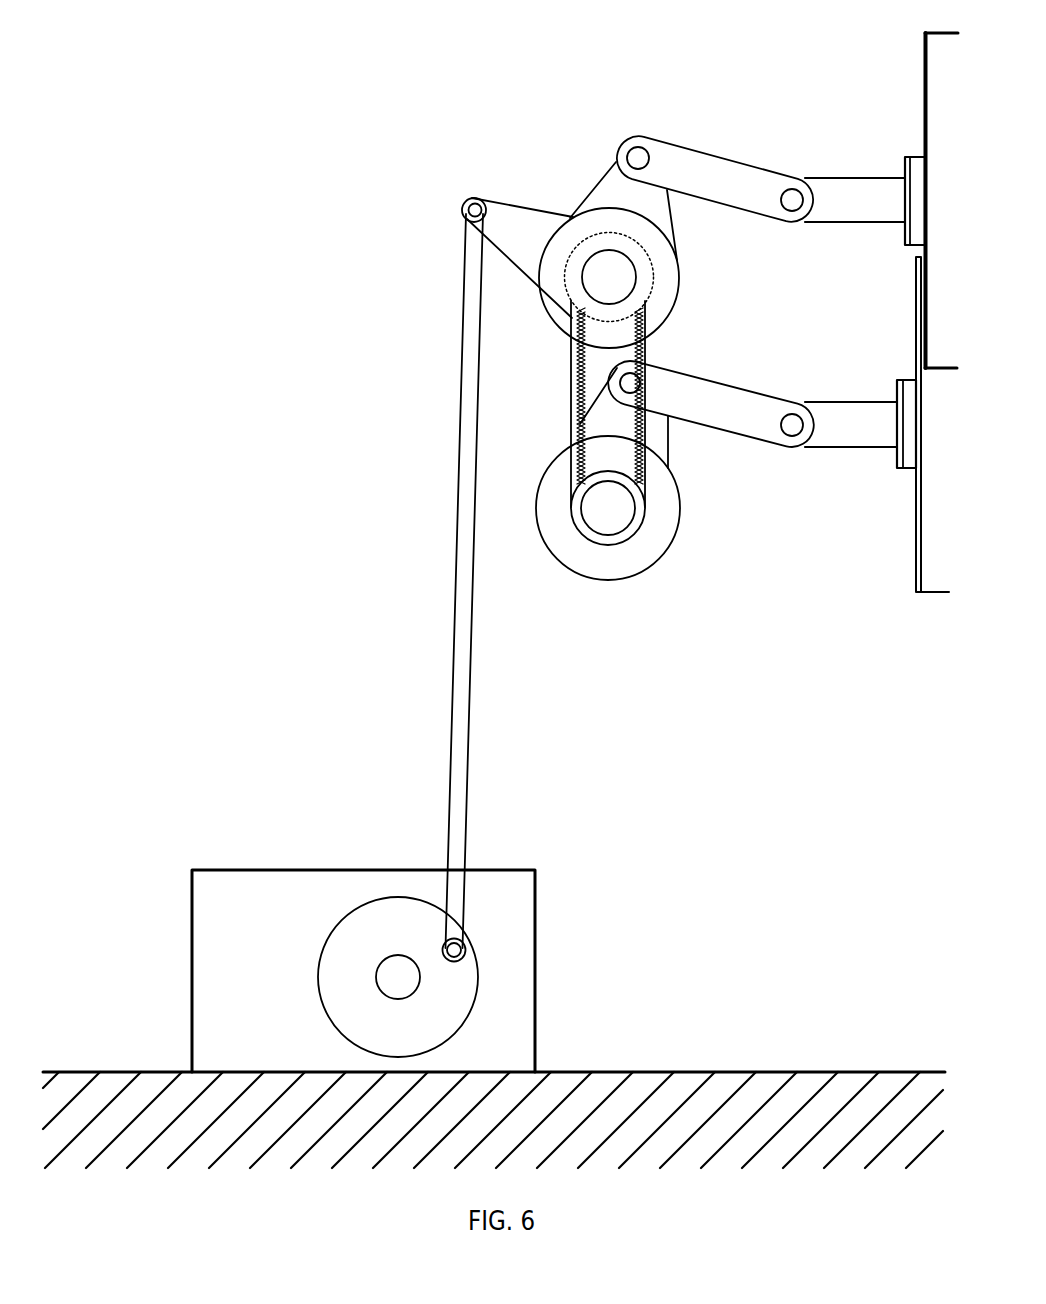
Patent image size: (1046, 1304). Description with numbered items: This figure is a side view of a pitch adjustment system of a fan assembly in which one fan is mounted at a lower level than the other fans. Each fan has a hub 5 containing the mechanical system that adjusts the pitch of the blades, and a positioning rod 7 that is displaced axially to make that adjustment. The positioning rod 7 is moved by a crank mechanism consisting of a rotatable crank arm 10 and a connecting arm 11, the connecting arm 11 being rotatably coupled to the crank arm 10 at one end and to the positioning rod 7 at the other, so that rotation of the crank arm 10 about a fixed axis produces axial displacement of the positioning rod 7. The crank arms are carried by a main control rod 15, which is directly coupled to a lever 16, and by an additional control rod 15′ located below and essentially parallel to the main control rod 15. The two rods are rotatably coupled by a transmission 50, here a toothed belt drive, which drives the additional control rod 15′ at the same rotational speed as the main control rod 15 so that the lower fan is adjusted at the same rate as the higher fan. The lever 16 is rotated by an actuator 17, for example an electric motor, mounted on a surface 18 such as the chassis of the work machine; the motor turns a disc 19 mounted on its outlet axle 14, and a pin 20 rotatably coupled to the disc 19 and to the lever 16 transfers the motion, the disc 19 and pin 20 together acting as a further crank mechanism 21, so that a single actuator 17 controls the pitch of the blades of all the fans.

The hub 5 is at (937, 75).
The positioning rod 7 is at (868, 200).
The crank arm 10 is at (608, 188).
The connecting arm 11 is at (719, 170).
The outlet axle 14 is at (410, 980).
The control rod 15 is at (623, 277).
The additional control rod 15′ is at (607, 507).
The lever 16 is at (538, 230).
The actuator 17 is at (250, 898).
The surface 18 is at (742, 1092).
The disc 19 is at (395, 920).
The pin 20 is at (468, 422).
The further crank mechanism 21 is at (393, 849).
The transmission 50 is at (552, 363).